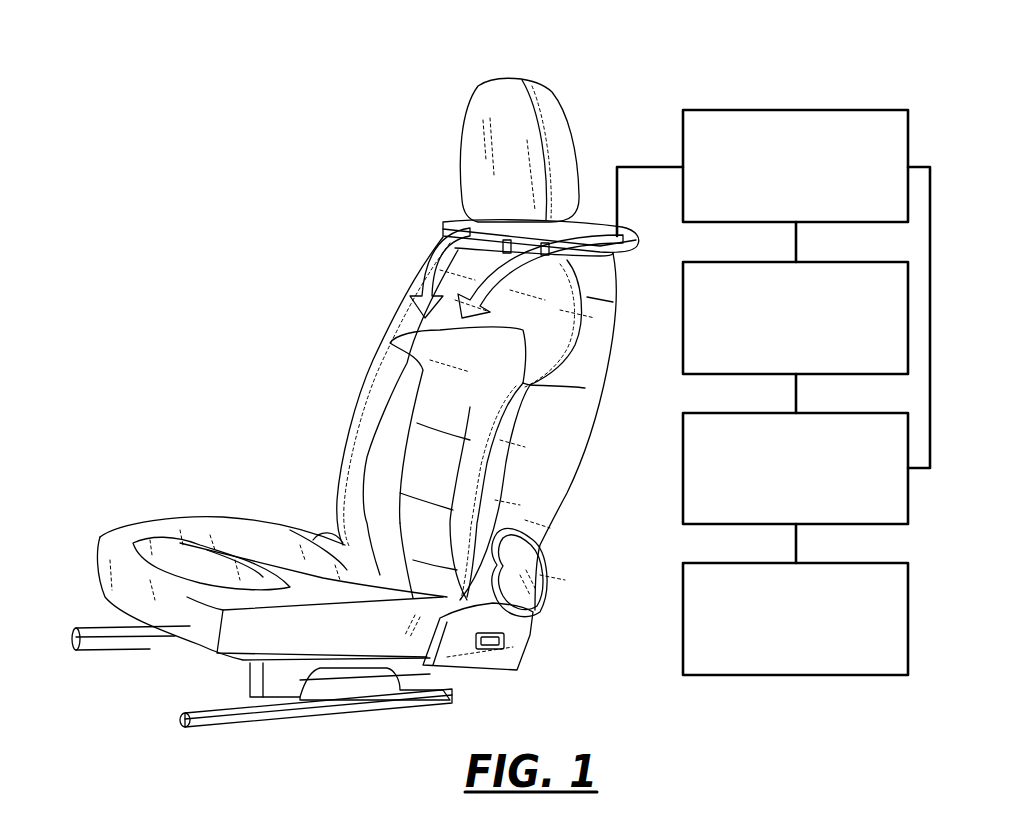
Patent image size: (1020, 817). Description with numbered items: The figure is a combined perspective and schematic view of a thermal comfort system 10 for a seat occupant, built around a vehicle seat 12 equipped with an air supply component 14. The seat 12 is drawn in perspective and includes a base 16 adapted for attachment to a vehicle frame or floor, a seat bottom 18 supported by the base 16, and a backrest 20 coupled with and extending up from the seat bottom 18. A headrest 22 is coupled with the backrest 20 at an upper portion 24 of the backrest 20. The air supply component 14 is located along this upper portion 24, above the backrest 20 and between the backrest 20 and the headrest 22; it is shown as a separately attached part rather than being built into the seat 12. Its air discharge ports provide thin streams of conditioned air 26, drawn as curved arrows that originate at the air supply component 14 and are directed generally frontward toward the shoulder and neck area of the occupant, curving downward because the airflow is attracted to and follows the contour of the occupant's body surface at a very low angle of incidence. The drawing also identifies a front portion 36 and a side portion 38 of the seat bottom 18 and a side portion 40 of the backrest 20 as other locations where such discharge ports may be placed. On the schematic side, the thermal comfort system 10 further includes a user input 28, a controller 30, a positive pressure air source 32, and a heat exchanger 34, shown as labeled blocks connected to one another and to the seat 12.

The thermal comfort system 10 is at (712, 76).
The seat 12 is at (264, 358).
The air supply component 14 is at (465, 220).
The base 16 is at (263, 717).
The seat bottom 18 is at (317, 643).
The backrest 20 is at (370, 413).
The headrest 22 is at (509, 93).
The upper portion of the backrest 24 is at (487, 260).
The thin stream of conditioned air 26 is at (466, 316).
The user input 28 is at (700, 677).
The controller 30 is at (700, 527).
The positive pressure air source 32 is at (700, 378).
The heat exchanger 34 is at (700, 226).
The front portion of the seat bottom 36 is at (133, 587).
The side portion of the seat bottom 38 is at (355, 623).
The side portion of the backrest 40 is at (543, 427).